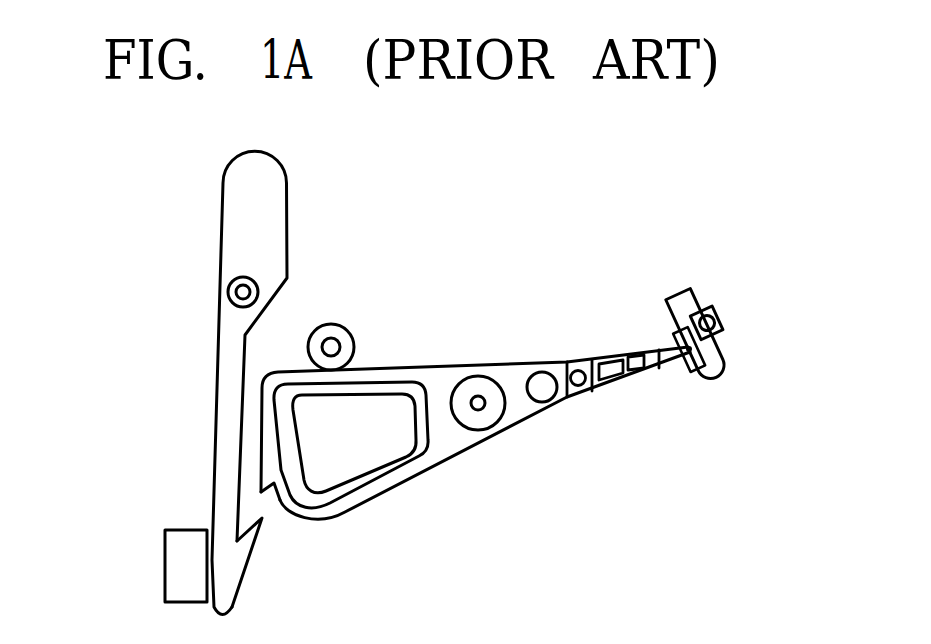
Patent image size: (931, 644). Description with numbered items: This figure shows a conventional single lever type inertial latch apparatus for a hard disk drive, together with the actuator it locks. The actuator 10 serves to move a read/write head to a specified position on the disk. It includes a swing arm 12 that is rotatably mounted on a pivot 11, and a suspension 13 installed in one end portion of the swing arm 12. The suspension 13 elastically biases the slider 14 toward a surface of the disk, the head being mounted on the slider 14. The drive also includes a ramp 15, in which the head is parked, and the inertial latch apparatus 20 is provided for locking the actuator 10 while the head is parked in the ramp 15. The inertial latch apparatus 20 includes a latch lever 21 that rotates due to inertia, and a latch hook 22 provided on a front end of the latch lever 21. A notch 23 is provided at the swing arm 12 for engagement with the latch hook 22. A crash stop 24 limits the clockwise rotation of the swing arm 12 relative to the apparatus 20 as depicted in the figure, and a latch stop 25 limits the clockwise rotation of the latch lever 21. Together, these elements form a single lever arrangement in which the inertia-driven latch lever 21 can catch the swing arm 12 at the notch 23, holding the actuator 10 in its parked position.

The actuator 10 is at (433, 382).
The pivot 11 is at (477, 400).
The swing arm 12 is at (523, 417).
The suspension 13 is at (650, 373).
The slider 14 is at (687, 347).
The ramp 15 is at (722, 353).
The inertial latch apparatus 20 is at (227, 382).
The latch lever 21 is at (225, 354).
The latch hook 22 is at (253, 543).
The notch 23 is at (258, 490).
The crash stop 24 is at (342, 324).
The latch stop 25 is at (183, 530).